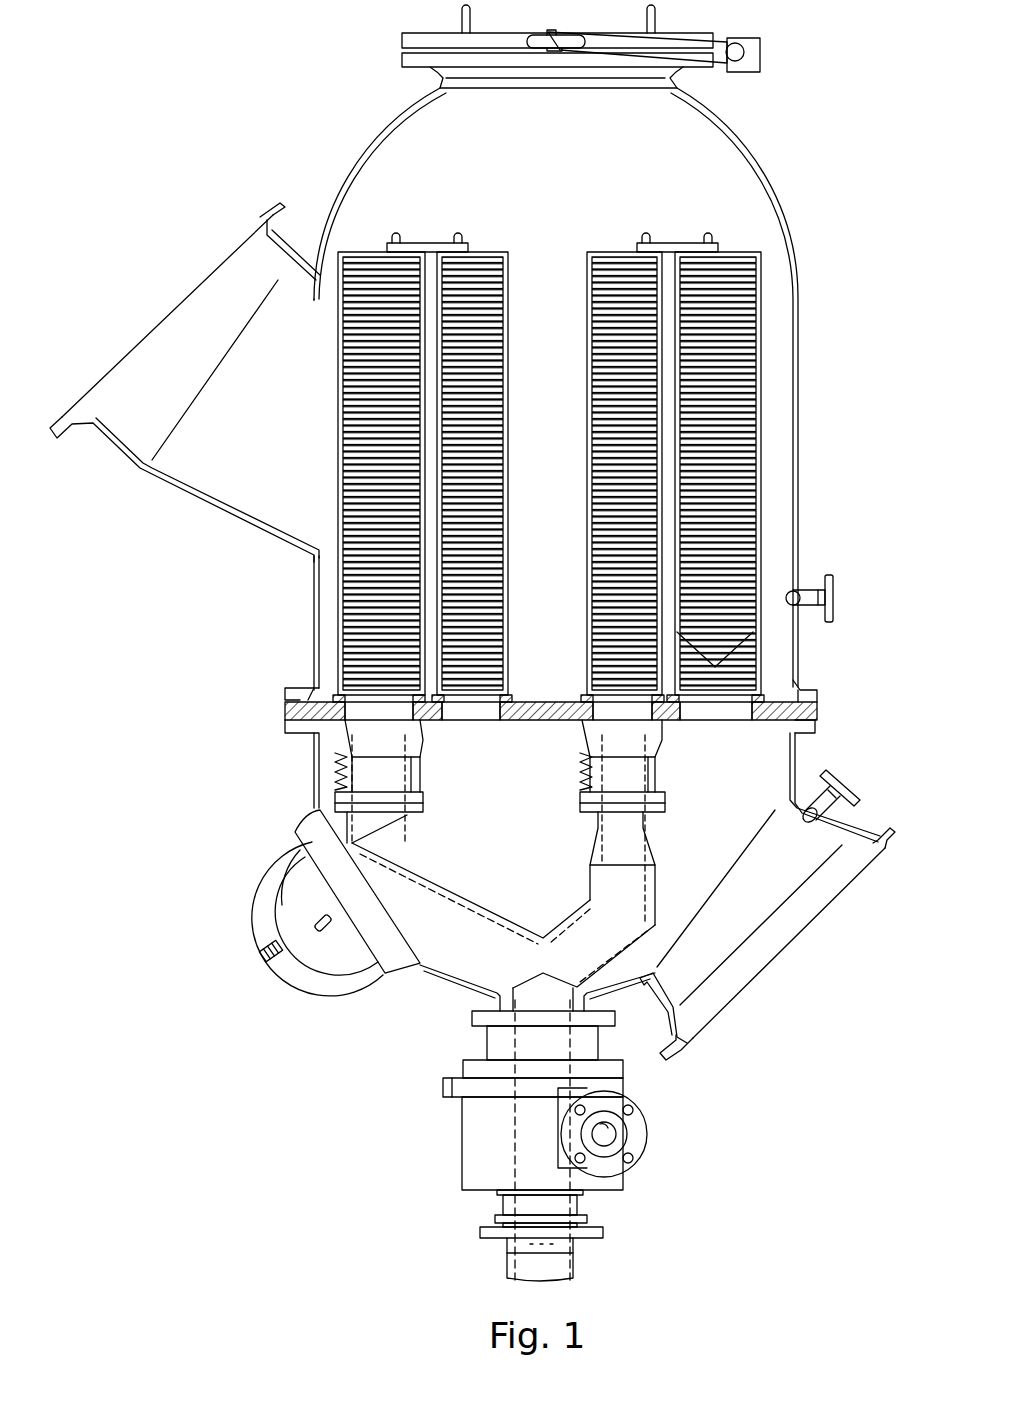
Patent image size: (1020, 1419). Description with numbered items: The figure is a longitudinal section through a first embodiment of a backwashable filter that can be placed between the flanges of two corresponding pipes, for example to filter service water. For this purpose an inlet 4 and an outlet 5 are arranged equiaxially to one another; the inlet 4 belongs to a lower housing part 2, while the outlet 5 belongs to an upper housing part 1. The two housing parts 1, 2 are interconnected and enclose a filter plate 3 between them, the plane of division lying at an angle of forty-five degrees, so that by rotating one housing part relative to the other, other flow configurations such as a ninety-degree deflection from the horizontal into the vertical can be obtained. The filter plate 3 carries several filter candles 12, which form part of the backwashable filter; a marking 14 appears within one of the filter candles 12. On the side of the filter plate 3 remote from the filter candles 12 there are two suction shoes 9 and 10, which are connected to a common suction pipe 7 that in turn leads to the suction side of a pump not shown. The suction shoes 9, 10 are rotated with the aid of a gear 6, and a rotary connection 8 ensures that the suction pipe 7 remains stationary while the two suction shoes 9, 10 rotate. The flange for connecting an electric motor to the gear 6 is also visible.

The upper housing part 1 is at (312, 617).
The lower housing part 2 is at (320, 783).
The filter plate 3 is at (284, 712).
The inlet 4 is at (800, 911).
The outlet 5 is at (135, 443).
The gear 6 is at (487, 1145).
The suction pipe 7 is at (550, 1268).
The rotary connection 8 is at (490, 1235).
The suction shoe 9 is at (630, 780).
The suction shoe 10 is at (362, 748).
The filter candle 12 is at (363, 288).
The filter element marking 14 is at (755, 650).